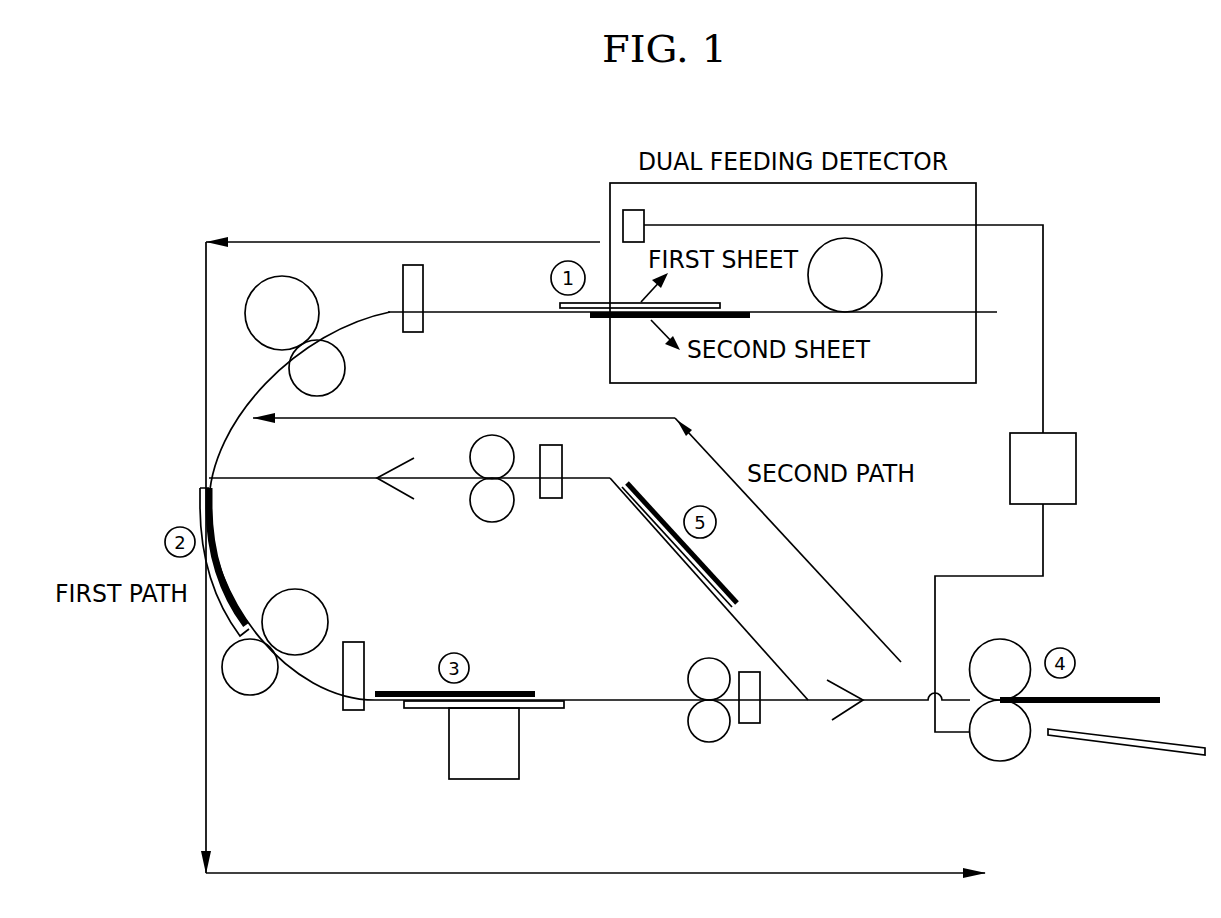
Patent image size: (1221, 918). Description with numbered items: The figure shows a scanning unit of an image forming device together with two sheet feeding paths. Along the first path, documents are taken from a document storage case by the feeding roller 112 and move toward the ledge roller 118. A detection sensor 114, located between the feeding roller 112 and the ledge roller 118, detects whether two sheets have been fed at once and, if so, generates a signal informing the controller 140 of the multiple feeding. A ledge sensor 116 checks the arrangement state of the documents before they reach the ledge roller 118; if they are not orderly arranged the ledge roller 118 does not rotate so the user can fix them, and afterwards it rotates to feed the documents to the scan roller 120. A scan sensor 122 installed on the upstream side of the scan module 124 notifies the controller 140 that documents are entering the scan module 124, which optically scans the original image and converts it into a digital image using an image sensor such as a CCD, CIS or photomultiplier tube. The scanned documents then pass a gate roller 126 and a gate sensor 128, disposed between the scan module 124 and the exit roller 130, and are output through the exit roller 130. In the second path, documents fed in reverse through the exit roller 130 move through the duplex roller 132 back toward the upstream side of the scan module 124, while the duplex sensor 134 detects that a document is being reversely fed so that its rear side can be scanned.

The feeding roller 112 is at (882, 265).
The detection sensor 114 is at (634, 210).
The ledge sensor 116 is at (423, 283).
The ledge roller 118 is at (315, 293).
The scan roller 120 is at (250, 695).
The scan sensor 122 is at (352, 710).
The scan module 124 is at (484, 780).
The gate roller 126 is at (708, 743).
The gate sensor 128 is at (748, 724).
The exit roller 130 is at (1000, 761).
The duplex roller 132 is at (492, 522).
The duplex sensor 134 is at (548, 498).
The controller 140 is at (1076, 467).